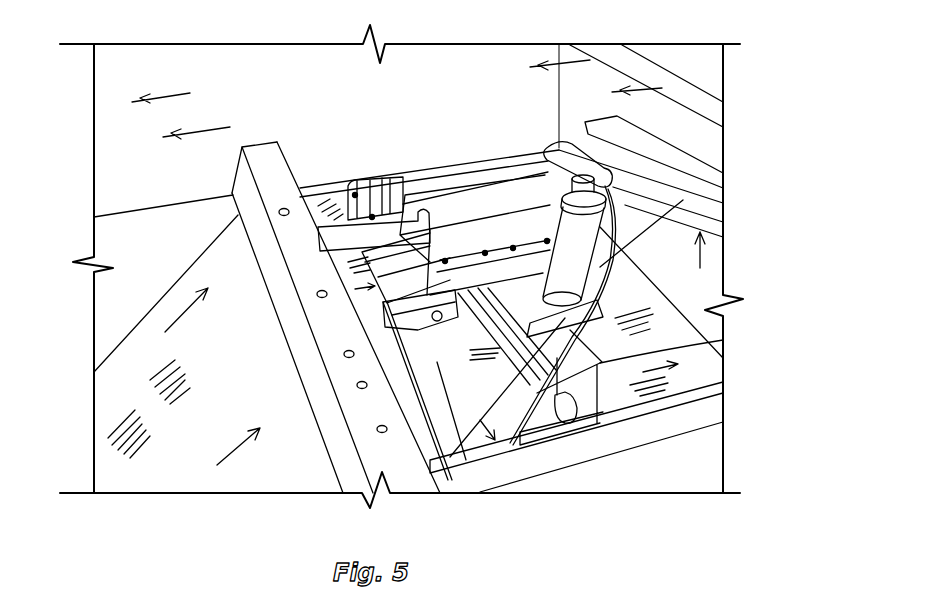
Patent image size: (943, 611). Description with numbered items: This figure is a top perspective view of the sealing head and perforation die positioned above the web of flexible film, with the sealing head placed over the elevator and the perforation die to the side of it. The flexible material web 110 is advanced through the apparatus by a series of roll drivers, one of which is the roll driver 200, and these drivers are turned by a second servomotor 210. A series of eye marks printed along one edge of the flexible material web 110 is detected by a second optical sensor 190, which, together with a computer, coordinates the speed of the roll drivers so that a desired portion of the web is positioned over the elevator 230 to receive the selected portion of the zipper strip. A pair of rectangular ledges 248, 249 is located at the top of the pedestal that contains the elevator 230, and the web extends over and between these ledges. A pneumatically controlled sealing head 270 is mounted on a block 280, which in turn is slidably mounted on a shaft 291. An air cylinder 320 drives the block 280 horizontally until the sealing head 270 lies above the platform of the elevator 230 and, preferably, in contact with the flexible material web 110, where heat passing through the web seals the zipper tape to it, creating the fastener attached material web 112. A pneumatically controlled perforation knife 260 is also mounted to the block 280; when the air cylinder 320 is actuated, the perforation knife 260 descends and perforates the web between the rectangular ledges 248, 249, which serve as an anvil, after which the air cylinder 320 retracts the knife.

The flexible material web 110 is at (108, 400).
The fastener attached material web 112 is at (657, 115).
The roll driver 200 is at (705, 137).
The second servomotor 210 is at (467, 200).
The block 280 is at (540, 210).
The shaft 291 is at (373, 176).
The air cylinder 320 is at (580, 258).
The perforation knife 260 is at (452, 322).
The rectangular ledge 248 is at (512, 382).
The elevator 230 is at (437, 395).
The sealing head 270 is at (723, 340).
The rectangular ledge 249 is at (600, 358).
The second optical sensor 190 is at (575, 350).